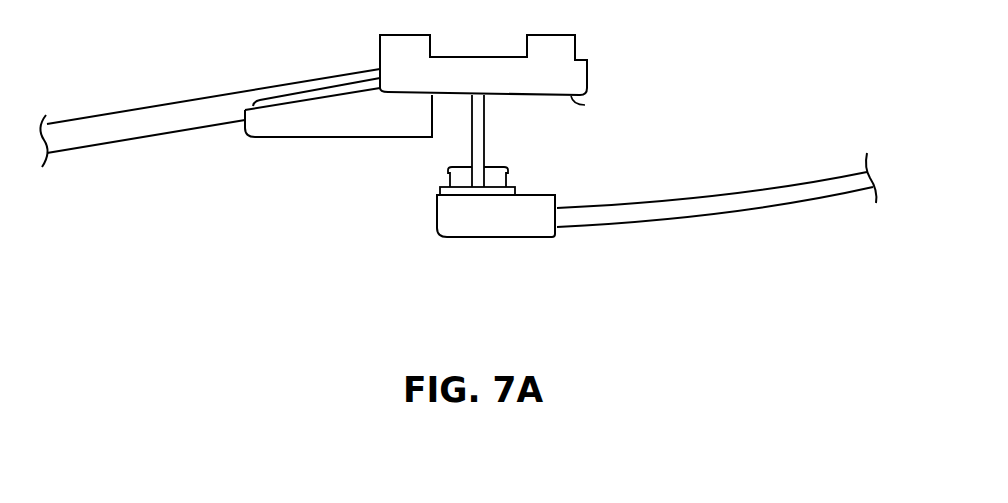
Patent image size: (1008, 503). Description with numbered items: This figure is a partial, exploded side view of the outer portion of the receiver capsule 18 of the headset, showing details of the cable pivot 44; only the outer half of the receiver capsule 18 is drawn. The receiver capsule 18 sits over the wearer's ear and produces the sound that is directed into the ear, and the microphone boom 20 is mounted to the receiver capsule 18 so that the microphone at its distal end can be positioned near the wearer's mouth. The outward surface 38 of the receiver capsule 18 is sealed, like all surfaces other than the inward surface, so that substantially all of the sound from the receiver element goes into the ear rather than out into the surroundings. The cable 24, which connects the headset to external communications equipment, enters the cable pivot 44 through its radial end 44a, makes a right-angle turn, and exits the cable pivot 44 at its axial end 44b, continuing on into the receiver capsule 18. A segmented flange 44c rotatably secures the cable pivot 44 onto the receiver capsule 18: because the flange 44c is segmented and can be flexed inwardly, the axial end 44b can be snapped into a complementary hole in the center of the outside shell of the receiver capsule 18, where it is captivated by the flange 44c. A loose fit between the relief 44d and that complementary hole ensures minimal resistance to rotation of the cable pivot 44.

The receiver capsule 18 is at (587, 70).
The microphone boom 20 is at (133, 110).
The cable 24 is at (483, 117).
The outward surface 38 is at (585, 105).
The cable pivot 44 is at (486, 208).
The radial end 44a is at (550, 237).
The axial end 44b is at (447, 178).
The segmented flange 44c is at (497, 167).
The relief 44d is at (509, 182).